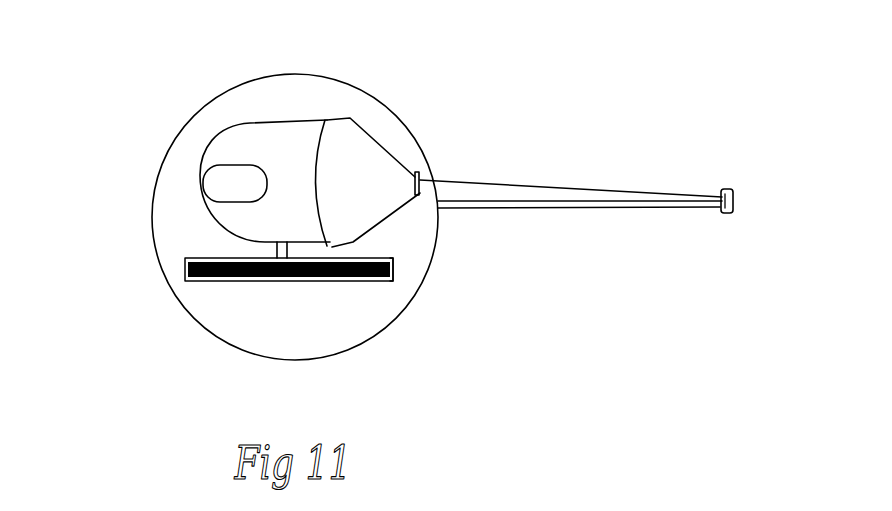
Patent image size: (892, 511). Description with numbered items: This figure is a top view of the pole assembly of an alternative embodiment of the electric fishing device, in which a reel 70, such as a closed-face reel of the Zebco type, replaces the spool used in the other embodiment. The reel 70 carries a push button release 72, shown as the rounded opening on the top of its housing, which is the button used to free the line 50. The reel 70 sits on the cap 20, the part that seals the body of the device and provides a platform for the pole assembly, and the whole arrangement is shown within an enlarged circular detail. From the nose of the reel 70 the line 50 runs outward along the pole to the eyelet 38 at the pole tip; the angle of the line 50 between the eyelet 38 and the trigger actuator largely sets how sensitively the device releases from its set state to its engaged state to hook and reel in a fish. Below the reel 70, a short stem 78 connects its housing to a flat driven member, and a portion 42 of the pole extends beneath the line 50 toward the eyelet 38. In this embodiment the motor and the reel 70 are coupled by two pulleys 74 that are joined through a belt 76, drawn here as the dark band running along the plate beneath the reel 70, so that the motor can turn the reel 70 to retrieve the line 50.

The cap 20 is at (182, 205).
The eyelet 38 is at (737, 198).
The rod lower portion 42 is at (552, 212).
The line 50 is at (483, 180).
The reel 70 is at (378, 135).
The push button release 72 is at (232, 175).
The pulleys 74 is at (280, 284).
The belt 76 is at (395, 268).
The stem connector 78 is at (289, 251).